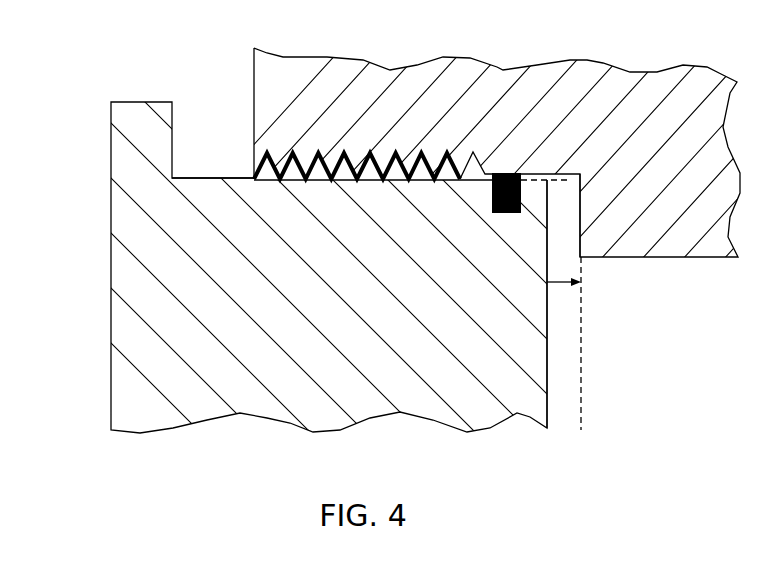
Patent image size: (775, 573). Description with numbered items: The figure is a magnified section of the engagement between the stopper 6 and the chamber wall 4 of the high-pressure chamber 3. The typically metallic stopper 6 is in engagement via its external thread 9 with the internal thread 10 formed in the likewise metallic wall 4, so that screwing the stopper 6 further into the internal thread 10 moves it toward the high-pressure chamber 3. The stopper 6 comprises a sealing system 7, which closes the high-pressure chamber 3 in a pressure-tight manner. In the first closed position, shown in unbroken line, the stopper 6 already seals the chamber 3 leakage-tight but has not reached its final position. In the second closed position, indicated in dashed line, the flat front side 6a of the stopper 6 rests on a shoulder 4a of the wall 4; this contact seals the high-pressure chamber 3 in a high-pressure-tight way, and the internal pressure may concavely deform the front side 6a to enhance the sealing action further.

The high-pressure chamber 3 is at (606, 341).
The chamber wall 4 is at (625, 87).
The shoulder 4a is at (580, 235).
The stopper 6 is at (137, 318).
The flat front side 6a is at (547, 407).
The sealing system 7 is at (513, 217).
The external thread 9 is at (267, 178).
The internal thread 10 is at (300, 160).